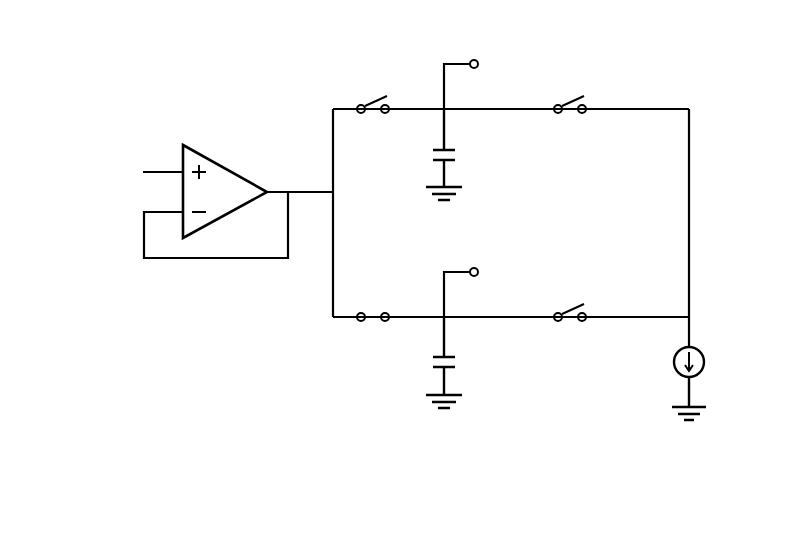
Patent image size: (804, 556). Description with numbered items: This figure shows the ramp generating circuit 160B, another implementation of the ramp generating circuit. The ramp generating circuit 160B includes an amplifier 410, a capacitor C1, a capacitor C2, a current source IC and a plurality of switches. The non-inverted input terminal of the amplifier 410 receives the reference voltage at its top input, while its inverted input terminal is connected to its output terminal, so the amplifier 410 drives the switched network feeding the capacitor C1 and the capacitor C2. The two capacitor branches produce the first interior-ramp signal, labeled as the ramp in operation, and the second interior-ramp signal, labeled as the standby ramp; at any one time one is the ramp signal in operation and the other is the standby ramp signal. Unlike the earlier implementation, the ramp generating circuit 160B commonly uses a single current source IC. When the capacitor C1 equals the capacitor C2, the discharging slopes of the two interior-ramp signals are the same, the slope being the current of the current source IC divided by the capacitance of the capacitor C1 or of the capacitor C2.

The ramp generating circuit 160B is at (92, 420).
The amplifier 410 is at (224, 166).
The capacitor C1 is at (456, 154).
The capacitor C2 is at (459, 362).
The current source IC is at (702, 383).